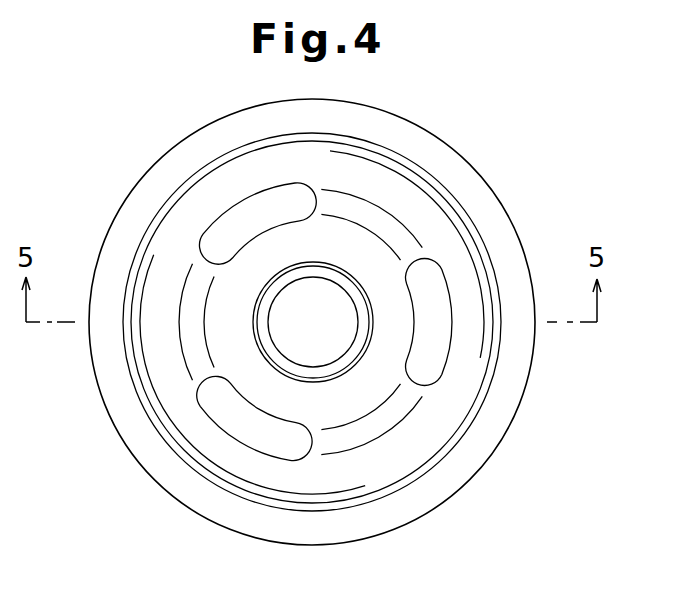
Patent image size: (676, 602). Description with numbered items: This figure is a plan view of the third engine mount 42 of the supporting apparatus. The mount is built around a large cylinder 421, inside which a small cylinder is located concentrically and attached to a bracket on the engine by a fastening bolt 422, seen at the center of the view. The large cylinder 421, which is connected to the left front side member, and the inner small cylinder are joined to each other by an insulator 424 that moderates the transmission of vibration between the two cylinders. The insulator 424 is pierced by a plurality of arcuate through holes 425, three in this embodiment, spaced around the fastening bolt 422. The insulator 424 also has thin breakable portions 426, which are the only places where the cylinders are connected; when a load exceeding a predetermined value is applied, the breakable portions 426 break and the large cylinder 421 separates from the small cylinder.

The third engine mount 42 is at (547, 189).
The large cylinder 421 is at (483, 437).
The fastening bolt 422 is at (338, 336).
The insulator 424 is at (312, 322).
The arcuate through holes 425 is at (228, 227).
The thin breakable portions 426 is at (195, 338).